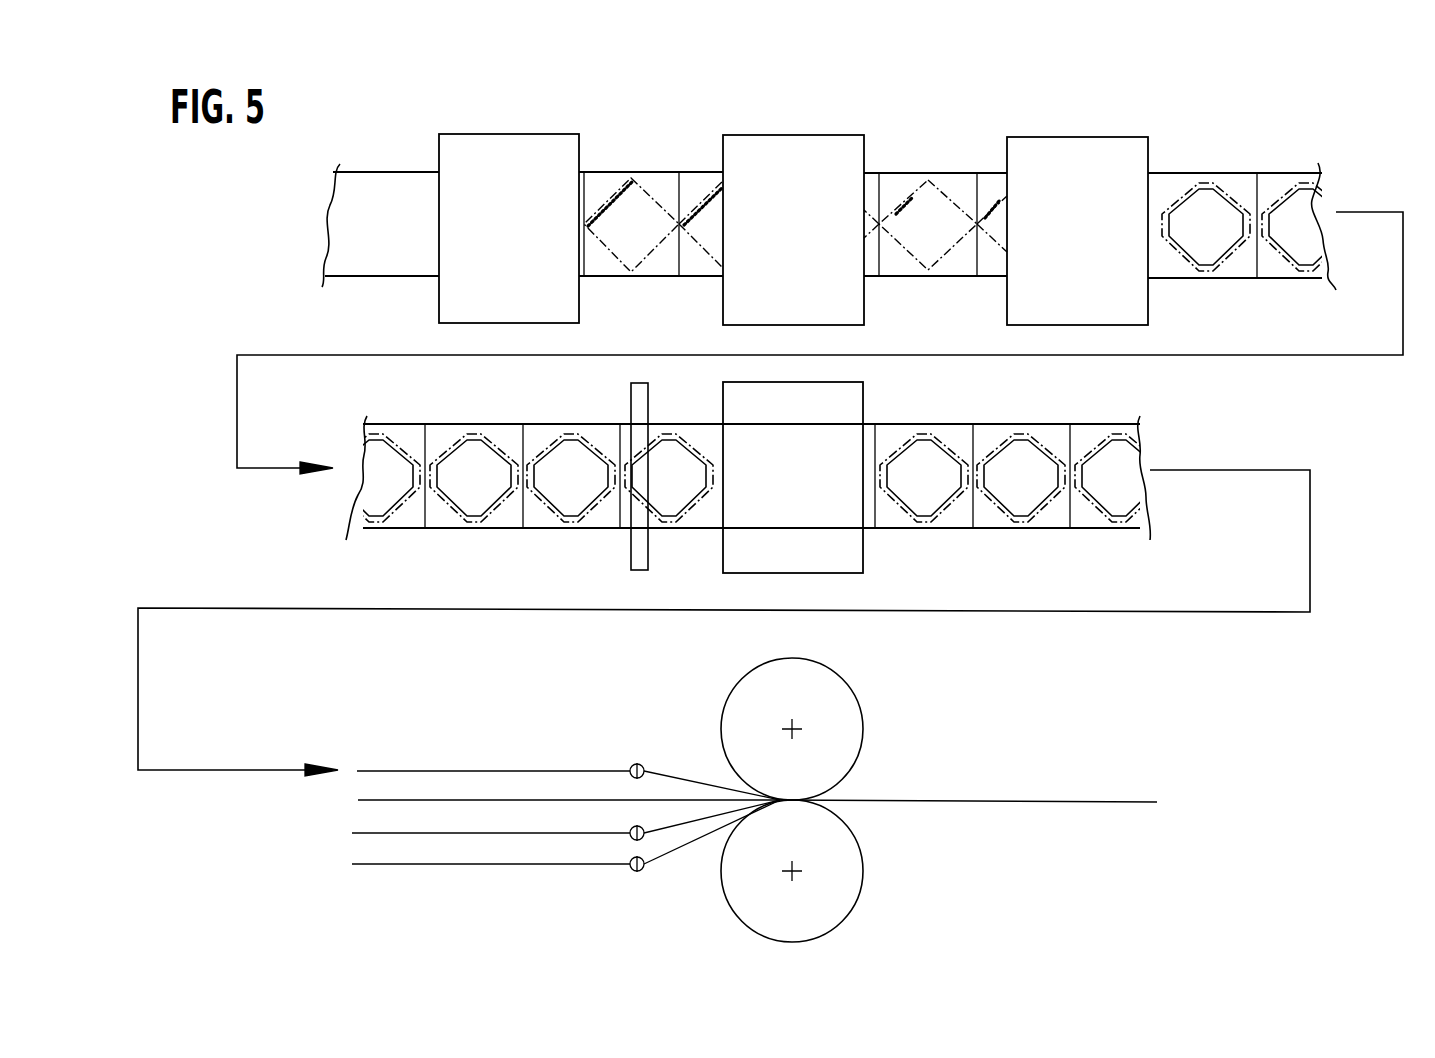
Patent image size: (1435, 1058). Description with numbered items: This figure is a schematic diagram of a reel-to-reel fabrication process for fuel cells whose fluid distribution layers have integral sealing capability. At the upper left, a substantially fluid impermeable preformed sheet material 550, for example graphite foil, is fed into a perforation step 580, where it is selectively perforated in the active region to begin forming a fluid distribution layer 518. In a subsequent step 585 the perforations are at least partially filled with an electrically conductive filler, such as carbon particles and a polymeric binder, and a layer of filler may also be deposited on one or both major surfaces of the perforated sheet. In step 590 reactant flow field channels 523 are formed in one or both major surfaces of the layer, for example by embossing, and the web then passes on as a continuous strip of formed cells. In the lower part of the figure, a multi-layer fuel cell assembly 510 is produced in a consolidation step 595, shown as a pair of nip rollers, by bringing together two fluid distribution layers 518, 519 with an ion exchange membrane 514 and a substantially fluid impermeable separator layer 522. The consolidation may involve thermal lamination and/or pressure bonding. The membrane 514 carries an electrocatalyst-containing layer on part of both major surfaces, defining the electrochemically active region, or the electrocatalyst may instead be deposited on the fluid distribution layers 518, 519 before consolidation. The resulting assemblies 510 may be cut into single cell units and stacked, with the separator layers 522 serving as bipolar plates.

The preformed sheet material 550 is at (381, 183).
The perforation step 580 is at (557, 146).
The filling step 585 is at (824, 160).
The channel forming step 590 is at (1102, 157).
The reactant flow field channels 523 is at (1246, 205).
The fluid distribution layer 518 is at (541, 513).
The consolidation step 595 is at (838, 667).
The ion exchange membrane 514 is at (436, 798).
The fluid distribution layer 519 is at (497, 832).
The separator layer 522 is at (568, 864).
The multi-layer fuel cell assembly 510 is at (945, 802).